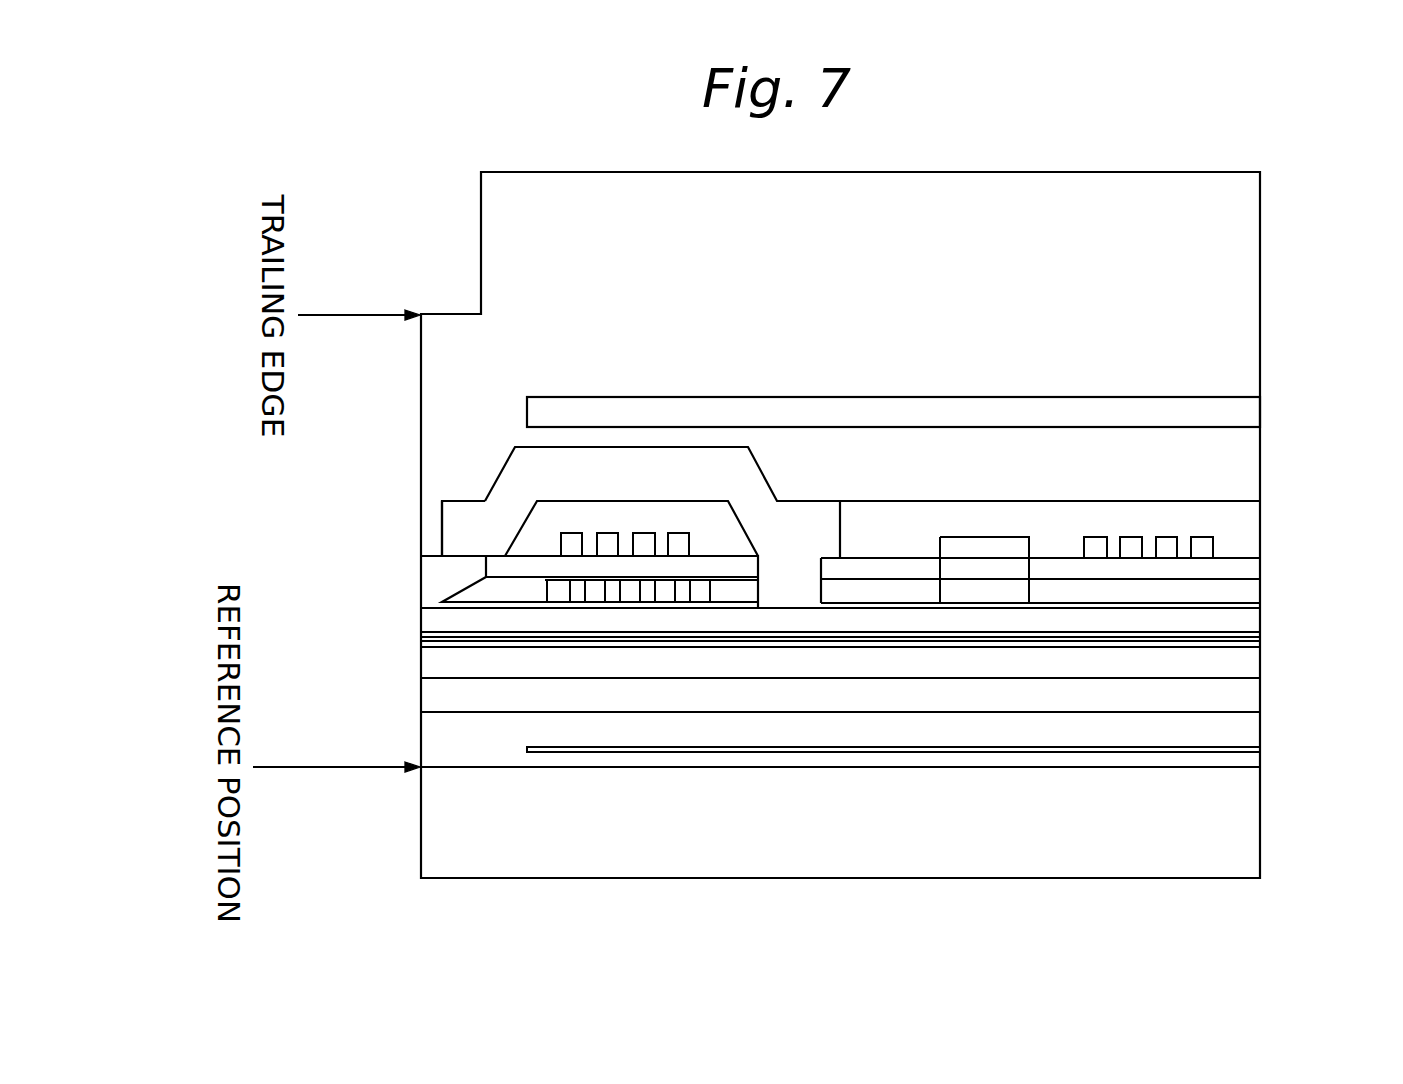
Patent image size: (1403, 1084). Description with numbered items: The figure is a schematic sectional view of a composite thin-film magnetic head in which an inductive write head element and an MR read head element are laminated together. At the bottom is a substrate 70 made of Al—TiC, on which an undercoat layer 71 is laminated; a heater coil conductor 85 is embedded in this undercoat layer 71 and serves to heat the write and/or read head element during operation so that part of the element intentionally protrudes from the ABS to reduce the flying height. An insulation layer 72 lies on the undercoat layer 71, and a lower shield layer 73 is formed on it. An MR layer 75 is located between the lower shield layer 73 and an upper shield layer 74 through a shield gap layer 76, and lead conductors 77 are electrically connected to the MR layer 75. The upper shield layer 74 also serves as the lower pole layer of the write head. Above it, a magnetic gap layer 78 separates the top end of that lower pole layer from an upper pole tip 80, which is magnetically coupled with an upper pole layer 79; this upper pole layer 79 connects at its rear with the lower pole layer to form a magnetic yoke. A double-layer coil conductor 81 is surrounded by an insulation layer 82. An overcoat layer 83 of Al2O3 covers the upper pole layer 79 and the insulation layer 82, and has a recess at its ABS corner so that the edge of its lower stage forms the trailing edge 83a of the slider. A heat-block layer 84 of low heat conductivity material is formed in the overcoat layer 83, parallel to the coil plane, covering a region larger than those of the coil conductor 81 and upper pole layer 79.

The substrate 70 is at (437, 817).
The undercoat layer 71 is at (433, 743).
The insulation layer 72 is at (433, 692).
The lower shield layer 73 is at (433, 660).
The upper shield layer 74 is at (433, 615).
The MR layer 75 is at (433, 640).
The shield gap layer 76 is at (433, 634).
The lead conductors 77 is at (1260, 643).
The magnetic gap layer 78 is at (427, 603).
The upper pole layer 79 is at (453, 518).
The upper pole tip 80 is at (433, 568).
The coil conductor 81 is at (577, 538).
The insulation layer 82 is at (532, 537).
The overcoat layer 83 is at (1237, 272).
The trailing edge 83a is at (420, 313).
The heat-block layer 84 is at (1245, 417).
The heater coil conductor 85 is at (527, 752).